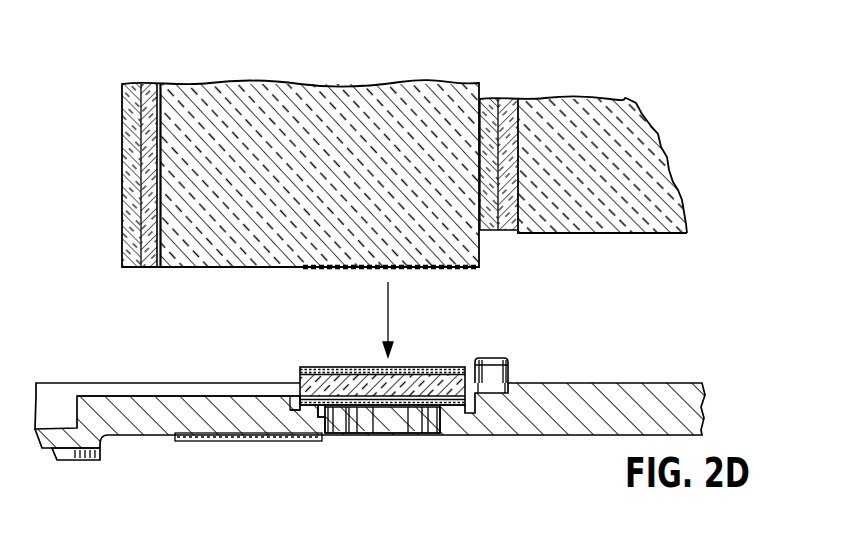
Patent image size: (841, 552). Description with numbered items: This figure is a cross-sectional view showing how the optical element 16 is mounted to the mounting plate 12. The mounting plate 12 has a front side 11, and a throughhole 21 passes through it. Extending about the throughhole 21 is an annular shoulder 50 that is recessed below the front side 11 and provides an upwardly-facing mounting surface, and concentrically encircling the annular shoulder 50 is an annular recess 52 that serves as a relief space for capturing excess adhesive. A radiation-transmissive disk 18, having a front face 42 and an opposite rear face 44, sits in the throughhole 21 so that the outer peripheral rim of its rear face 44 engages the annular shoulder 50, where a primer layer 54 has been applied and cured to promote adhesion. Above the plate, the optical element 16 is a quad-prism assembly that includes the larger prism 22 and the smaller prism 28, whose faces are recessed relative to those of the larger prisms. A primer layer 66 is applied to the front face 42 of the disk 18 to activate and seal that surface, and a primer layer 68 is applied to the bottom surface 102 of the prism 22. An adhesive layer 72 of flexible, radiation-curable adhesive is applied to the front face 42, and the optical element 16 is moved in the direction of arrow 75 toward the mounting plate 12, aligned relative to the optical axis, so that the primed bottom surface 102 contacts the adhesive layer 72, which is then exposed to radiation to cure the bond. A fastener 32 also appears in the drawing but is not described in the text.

The front surface or side 11 is at (109, 396).
The mounting plate 12 is at (644, 383).
The optical element 16 is at (627, 98).
The radiation-transmissive disk 18 is at (405, 382).
The throughhole 21 is at (387, 427).
The prism 22 is at (272, 83).
The prism 28 is at (541, 100).
The fastener 32 is at (510, 360).
The front face 42 is at (361, 373).
The rear face 44 is at (340, 390).
The annular shoulder 50 is at (321, 413).
The annular recess 52 is at (290, 410).
The primer layer 54 is at (408, 417).
The primer layer 66 is at (298, 375).
The primer layer 68 is at (304, 268).
The adhesive layer 72 is at (329, 368).
The arrow 75 is at (390, 292).
The bottom surface 102 is at (178, 268).